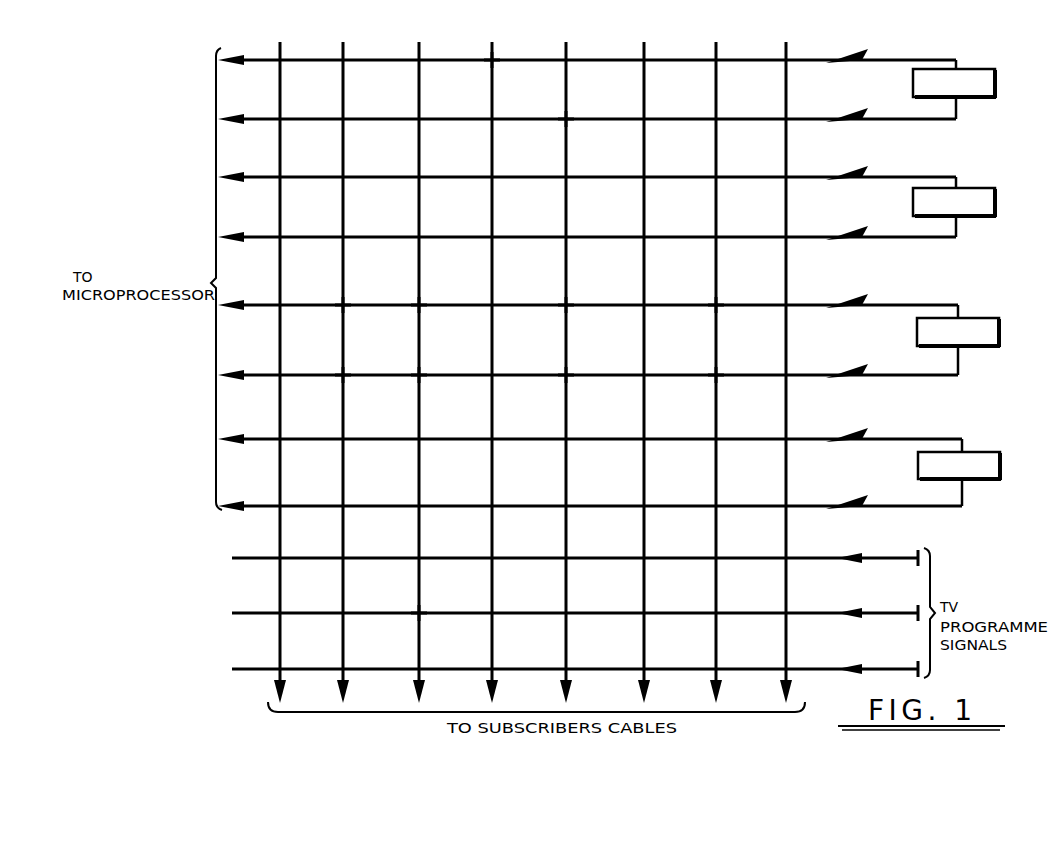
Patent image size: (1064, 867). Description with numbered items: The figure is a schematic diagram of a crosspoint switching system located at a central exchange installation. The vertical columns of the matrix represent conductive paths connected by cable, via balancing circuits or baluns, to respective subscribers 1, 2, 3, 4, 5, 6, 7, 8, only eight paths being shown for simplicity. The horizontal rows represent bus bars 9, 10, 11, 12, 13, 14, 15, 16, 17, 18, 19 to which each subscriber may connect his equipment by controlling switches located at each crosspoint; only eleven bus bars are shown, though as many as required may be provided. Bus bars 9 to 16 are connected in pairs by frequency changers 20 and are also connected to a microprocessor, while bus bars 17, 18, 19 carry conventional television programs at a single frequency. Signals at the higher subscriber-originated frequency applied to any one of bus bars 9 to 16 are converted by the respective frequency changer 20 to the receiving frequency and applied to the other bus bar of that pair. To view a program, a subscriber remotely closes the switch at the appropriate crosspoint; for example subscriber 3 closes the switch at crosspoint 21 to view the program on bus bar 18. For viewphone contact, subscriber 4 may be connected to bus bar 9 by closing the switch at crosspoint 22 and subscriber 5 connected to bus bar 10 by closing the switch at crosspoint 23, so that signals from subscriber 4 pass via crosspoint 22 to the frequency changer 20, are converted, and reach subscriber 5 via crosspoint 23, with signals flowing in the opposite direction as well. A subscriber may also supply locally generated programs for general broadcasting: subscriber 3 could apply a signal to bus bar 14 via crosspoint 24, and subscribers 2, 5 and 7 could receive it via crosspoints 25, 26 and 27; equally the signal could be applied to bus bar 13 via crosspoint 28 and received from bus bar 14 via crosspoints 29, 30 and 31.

The subscriber 1 is at (276, 372).
The subscriber 2 is at (339, 372).
The subscriber 3 is at (415, 372).
The subscriber 4 is at (488, 372).
The subscriber 5 is at (562, 372).
The subscriber 6 is at (640, 372).
The subscriber 7 is at (712, 372).
The subscriber 8 is at (782, 372).
The bus bar 9 is at (587, 54).
The bus bar 10 is at (587, 113).
The bus bar 11 is at (587, 171).
The bus bar 12 is at (587, 231).
The bus bar 13 is at (588, 299).
The bus bar 14 is at (588, 369).
The bus bar 15 is at (590, 433).
The bus bar 16 is at (590, 500).
The bus bar 17 is at (575, 553).
The bus bar 18 is at (575, 608).
The bus bar 19 is at (575, 664).
The frequency changer 20 is at (973, 87).
The crosspoint 21 is at (419, 613).
The crosspoint 22 is at (492, 62).
The crosspoint 23 is at (566, 121).
The crosspoint 24 is at (418, 375).
The crosspoint 25 is at (342, 305).
The crosspoint 26 is at (566, 305).
The crosspoint 27 is at (716, 305).
The crosspoint 28 is at (418, 305).
The crosspoint 29 is at (342, 375).
The crosspoint 30 is at (566, 375).
The crosspoint 31 is at (716, 375).